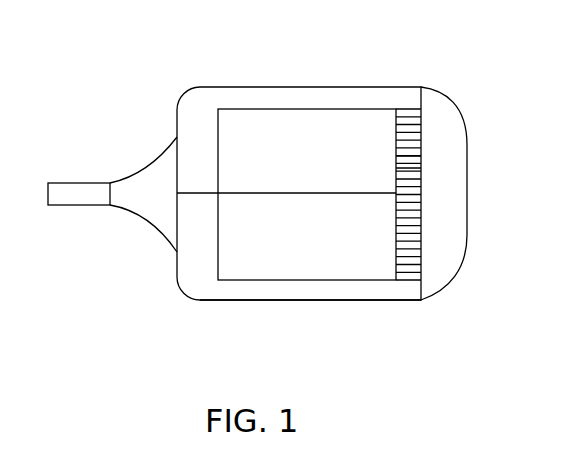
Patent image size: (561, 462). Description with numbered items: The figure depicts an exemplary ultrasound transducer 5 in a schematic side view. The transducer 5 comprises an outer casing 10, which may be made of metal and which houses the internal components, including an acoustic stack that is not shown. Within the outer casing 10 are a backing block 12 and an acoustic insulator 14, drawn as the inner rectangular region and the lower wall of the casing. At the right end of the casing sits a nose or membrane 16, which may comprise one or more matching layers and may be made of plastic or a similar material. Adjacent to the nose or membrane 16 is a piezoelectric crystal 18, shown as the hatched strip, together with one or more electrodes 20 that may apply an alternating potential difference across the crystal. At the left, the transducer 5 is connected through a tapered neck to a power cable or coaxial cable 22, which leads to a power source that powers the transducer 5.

The ultrasound transducer 5 is at (88, 56).
The outer casing 10 is at (312, 87).
The backing block 12 is at (369, 115).
The acoustic insulator 14 is at (256, 288).
The nose or membrane 16 is at (438, 282).
The piezoelectric crystal 18 is at (421, 231).
The electrodes 20 is at (421, 156).
The power cable or coaxial cable 22 is at (83, 196).